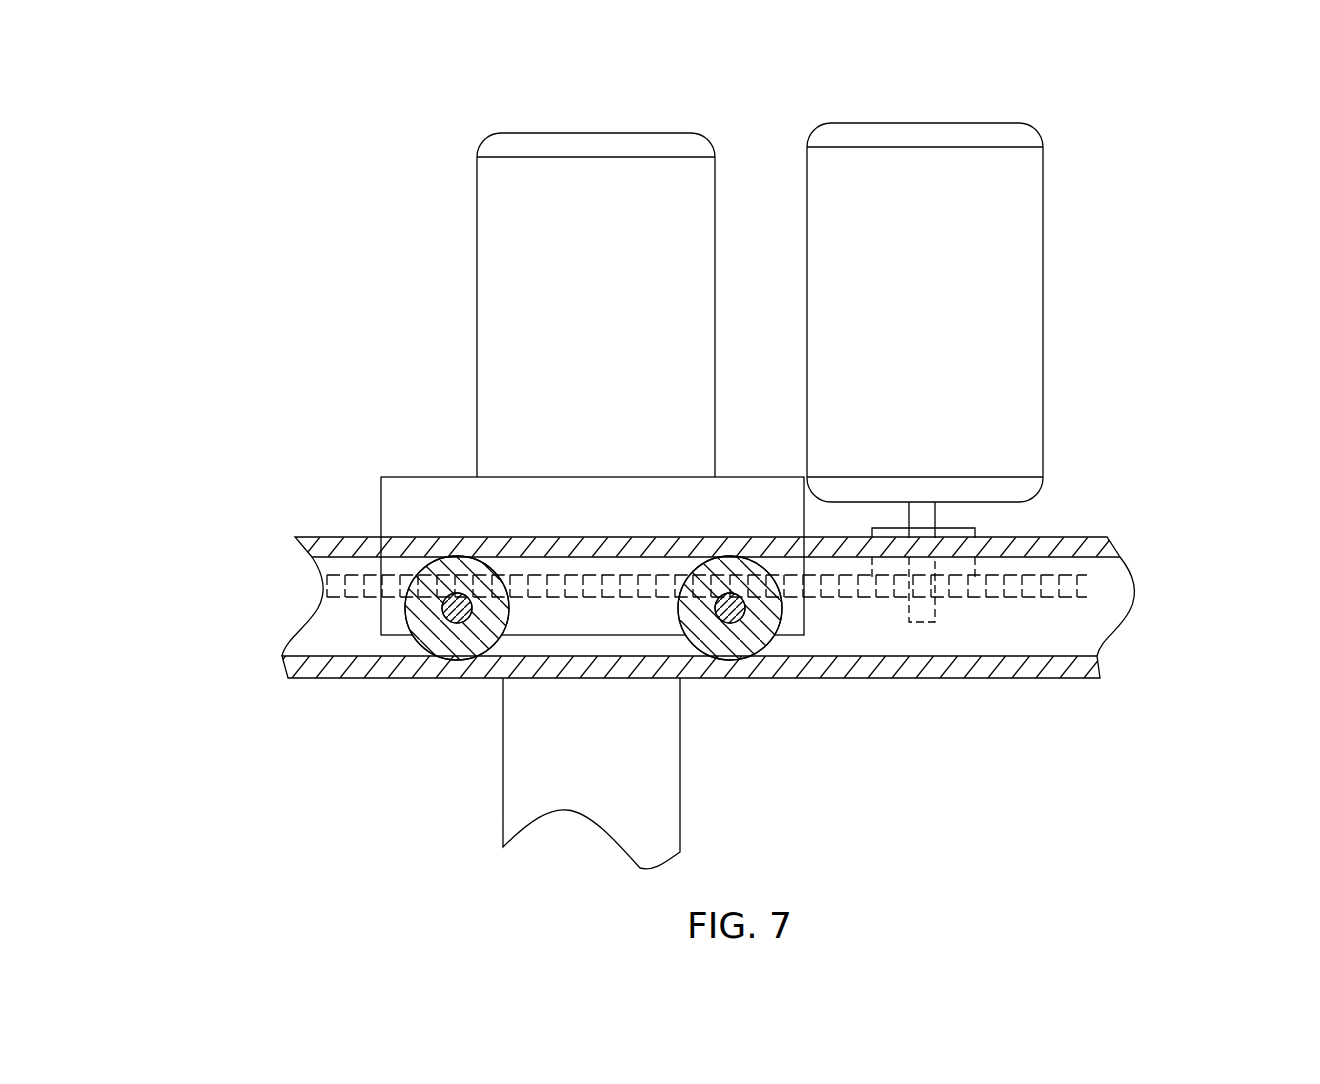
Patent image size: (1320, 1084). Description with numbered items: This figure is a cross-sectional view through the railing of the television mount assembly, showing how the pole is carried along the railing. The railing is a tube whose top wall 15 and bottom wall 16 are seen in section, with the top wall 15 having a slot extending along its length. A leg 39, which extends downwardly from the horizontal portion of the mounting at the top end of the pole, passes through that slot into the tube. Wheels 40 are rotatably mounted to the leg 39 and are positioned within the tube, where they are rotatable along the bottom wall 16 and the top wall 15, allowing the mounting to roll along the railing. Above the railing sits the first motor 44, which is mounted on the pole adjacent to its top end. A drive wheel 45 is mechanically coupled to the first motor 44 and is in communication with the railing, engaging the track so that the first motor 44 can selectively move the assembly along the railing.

The top wall 15 is at (1075, 543).
The bottom wall 16 is at (1020, 668).
The leg 39 is at (387, 632).
The wheel 40 is at (440, 648).
The first motor 44 is at (1028, 223).
The drive wheel 45 is at (968, 525).